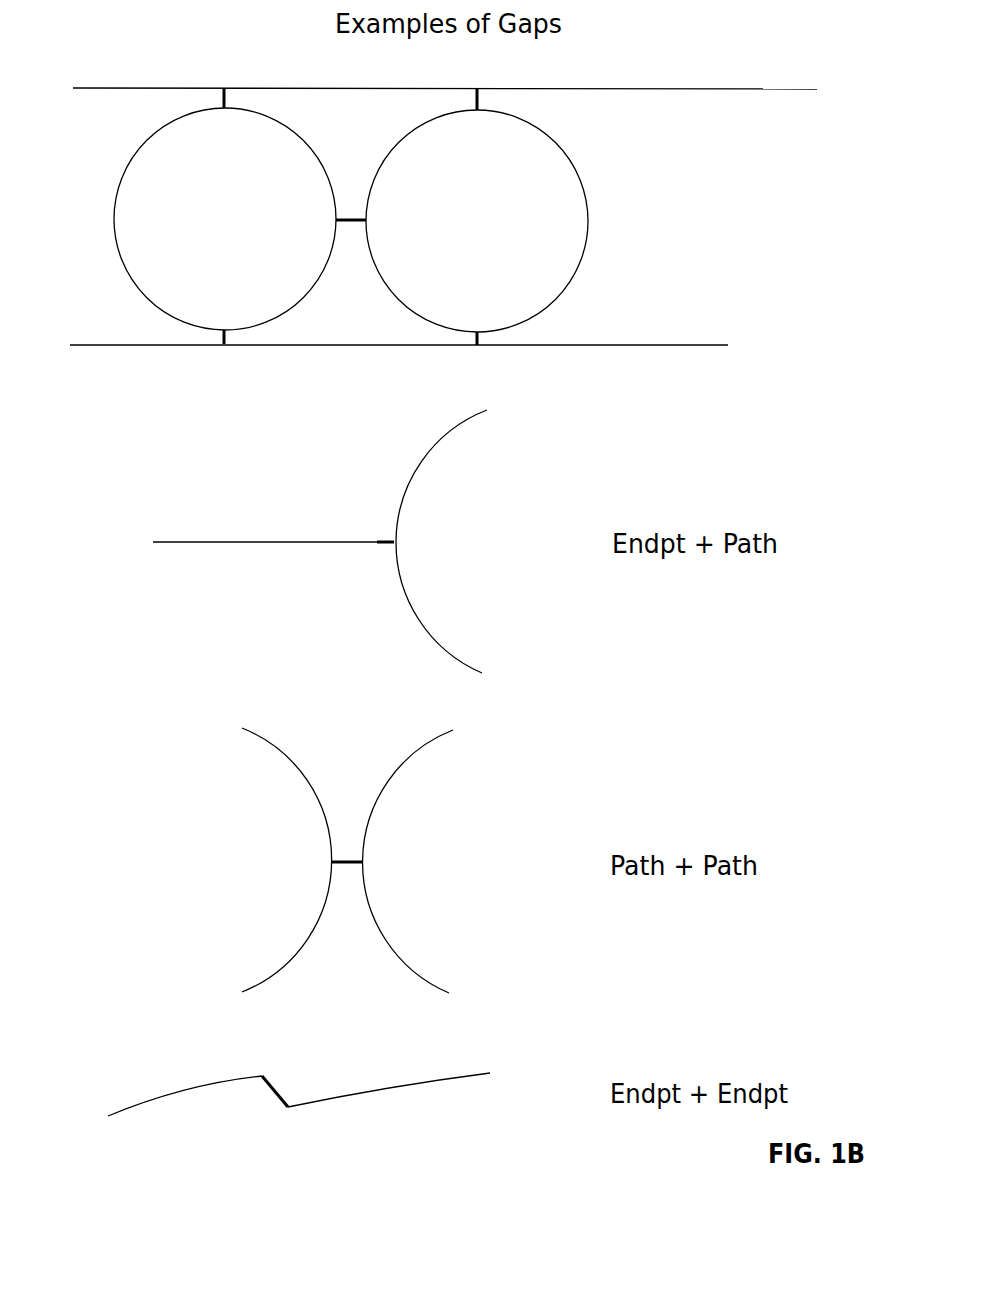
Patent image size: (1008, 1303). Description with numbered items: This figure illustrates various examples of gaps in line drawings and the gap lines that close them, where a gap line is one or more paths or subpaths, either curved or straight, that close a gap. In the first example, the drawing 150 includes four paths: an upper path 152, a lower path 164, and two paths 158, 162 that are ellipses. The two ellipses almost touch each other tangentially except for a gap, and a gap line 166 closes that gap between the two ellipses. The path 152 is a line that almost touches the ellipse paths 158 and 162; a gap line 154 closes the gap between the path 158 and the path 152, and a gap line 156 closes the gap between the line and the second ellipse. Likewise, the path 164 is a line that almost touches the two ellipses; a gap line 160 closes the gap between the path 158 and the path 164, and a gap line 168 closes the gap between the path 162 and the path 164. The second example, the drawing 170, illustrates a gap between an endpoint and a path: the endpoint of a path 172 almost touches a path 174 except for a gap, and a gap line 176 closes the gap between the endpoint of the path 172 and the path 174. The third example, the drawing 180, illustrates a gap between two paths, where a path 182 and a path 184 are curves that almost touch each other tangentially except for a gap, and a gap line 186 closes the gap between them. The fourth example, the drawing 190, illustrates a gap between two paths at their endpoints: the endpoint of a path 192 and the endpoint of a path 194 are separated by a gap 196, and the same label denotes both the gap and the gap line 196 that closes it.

The drawing 150 is at (785, 64).
The path 152 is at (128, 87).
The gap line 154 is at (226, 96).
The gap line 156 is at (480, 97).
The path 158 is at (112, 219).
The gap line 160 is at (228, 338).
The path 162 is at (590, 221).
The path 164 is at (628, 345).
The gap line 166 is at (345, 215).
The gap line 168 is at (481, 339).
The drawing 170 is at (140, 494).
The path 172 is at (208, 543).
The path 174 is at (422, 462).
The gap line 176 is at (388, 548).
The drawing 180 is at (148, 777).
The path 182 is at (272, 745).
The path 184 is at (440, 733).
The gap line 186 is at (352, 866).
The drawing 190 is at (147, 1043).
The path 192 is at (165, 1098).
The path 194 is at (393, 1088).
The gap 196 is at (278, 1092).